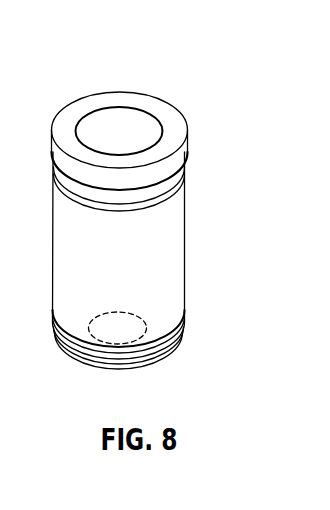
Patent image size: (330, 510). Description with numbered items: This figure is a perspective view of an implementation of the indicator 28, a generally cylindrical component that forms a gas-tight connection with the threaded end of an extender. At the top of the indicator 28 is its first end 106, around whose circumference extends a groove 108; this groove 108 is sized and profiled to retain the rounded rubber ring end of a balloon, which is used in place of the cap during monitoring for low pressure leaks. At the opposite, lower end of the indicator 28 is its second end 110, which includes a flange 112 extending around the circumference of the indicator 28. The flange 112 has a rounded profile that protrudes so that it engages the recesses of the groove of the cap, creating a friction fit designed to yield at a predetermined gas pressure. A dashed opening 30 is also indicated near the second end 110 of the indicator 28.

The opening 30 is at (120, 133).
The first end 106 is at (176, 157).
The groove 108 is at (182, 192).
The indicator 28 is at (172, 240).
The flange 112 is at (182, 330).
The second end 110 is at (178, 343).